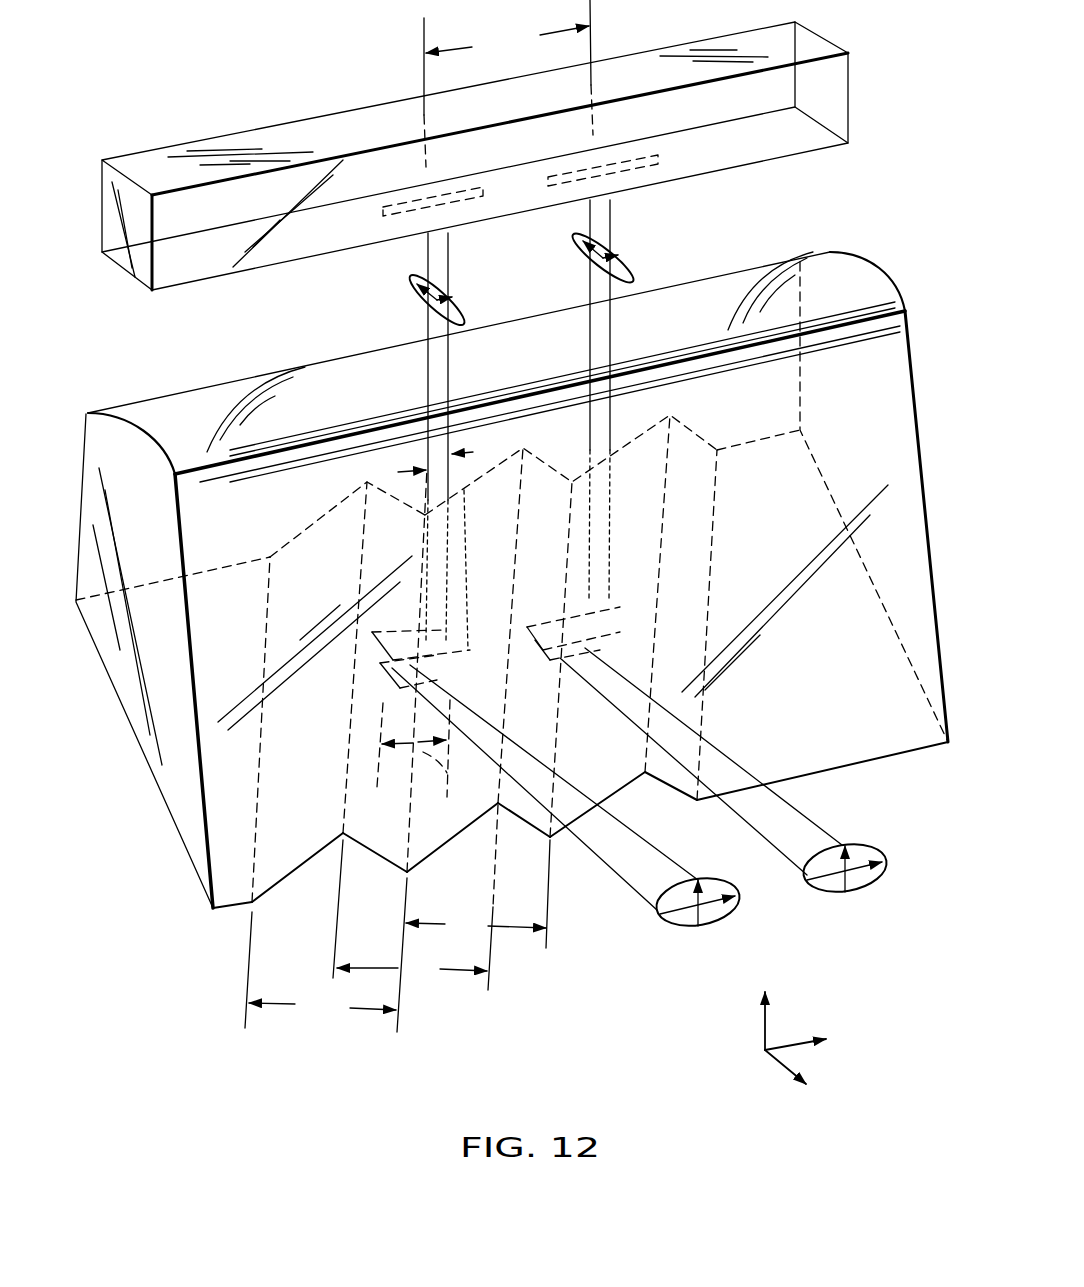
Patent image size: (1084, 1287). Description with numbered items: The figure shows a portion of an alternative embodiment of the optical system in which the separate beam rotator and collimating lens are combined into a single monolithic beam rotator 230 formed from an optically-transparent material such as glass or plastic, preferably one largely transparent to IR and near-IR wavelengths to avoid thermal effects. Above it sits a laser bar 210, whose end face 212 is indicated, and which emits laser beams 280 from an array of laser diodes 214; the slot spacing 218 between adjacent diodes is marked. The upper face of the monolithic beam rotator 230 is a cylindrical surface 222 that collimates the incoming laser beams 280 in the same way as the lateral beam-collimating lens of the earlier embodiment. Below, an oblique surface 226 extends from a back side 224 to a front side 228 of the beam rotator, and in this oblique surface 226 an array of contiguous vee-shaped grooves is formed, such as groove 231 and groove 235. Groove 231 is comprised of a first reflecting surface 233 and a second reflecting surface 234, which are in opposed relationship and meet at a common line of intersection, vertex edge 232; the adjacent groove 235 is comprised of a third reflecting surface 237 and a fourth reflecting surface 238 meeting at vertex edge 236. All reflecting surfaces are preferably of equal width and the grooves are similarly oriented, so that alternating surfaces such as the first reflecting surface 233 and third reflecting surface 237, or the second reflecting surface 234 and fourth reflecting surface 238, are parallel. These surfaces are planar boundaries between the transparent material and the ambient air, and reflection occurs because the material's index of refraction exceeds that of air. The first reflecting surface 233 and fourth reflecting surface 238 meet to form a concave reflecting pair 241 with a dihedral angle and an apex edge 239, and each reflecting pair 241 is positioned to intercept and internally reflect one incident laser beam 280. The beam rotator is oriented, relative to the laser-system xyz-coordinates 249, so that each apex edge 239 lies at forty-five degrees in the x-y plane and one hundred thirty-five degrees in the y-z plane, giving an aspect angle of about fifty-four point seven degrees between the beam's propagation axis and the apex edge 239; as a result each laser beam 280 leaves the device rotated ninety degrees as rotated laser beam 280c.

The laser bar 210 is at (459, 164).
The end face of light bar 212 is at (127, 272).
The laser diodes 214 is at (483, 200).
The slot spacing 218 is at (508, 83).
The cylindrical surface 222 is at (345, 373).
The back side 224 is at (75, 440).
The oblique surface 226 is at (167, 805).
The front side 228 is at (865, 748).
The monolithic beam rotator 230 is at (506, 612).
The groove 231 is at (326, 955).
The vertex edge 232 is at (362, 538).
The first reflecting surface 233 is at (393, 868).
The second reflecting surface 234 is at (278, 887).
The groove 235 is at (478, 894).
The vertex edge 236 is at (520, 513).
The third reflecting surface 237 is at (516, 817).
The fourth reflecting surface 238 is at (432, 855).
The apex edge 239 is at (405, 838).
The concave reflecting pair 241 is at (415, 897).
The laser-system xyz-coordinates 249 is at (793, 1018).
The laser beam 280 is at (437, 325).
The rotated laser beam 280c is at (660, 868).